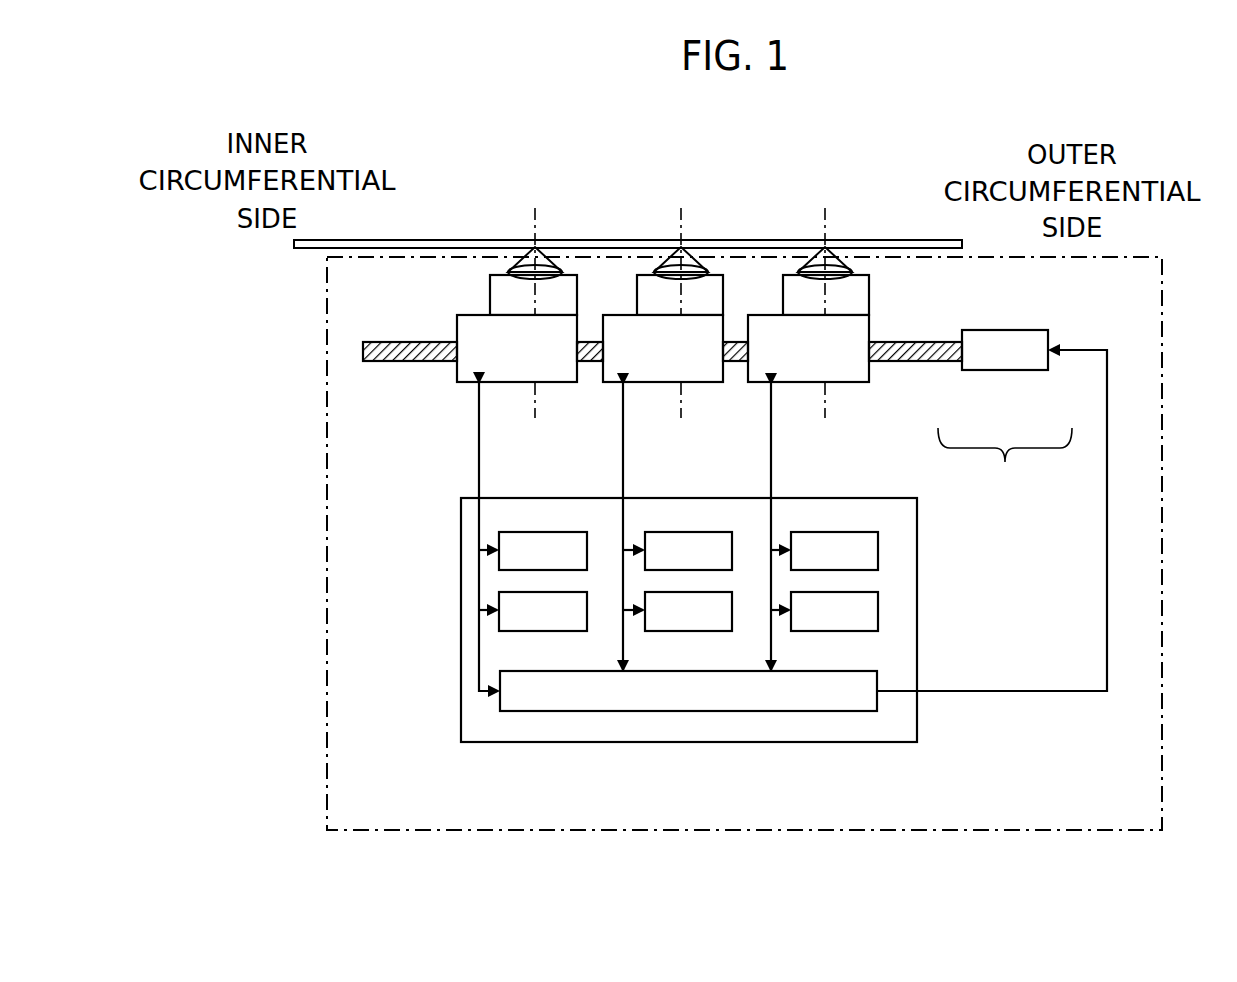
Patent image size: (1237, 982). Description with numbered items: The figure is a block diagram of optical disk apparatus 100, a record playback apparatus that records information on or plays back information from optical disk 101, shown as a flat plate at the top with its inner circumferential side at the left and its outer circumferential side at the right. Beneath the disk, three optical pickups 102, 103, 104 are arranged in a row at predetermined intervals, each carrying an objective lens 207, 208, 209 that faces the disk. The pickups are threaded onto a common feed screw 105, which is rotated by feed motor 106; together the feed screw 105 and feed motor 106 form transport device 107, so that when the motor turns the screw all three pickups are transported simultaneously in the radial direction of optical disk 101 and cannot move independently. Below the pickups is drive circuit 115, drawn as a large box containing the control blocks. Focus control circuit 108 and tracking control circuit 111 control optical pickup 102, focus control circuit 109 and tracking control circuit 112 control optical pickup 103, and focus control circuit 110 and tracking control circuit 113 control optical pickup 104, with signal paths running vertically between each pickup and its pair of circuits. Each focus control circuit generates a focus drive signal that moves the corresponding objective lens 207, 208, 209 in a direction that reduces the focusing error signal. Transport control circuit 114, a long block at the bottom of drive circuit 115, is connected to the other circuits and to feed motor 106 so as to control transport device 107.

The optical disk apparatus 100 is at (1162, 370).
The optical disk 101 is at (855, 239).
The optical pickup 102 is at (465, 327).
The optical pickup 103 is at (612, 310).
The optical pickup 104 is at (850, 327).
The feed screw 105 is at (923, 360).
The feed motor 106 is at (988, 347).
The transport device 107 is at (1005, 463).
The focus control circuit 108 is at (507, 535).
The focus control circuit 109 is at (653, 535).
The focus control circuit 110 is at (803, 535).
The tracking control circuit 111 is at (507, 602).
The tracking control circuit 112 is at (695, 603).
The tracking control circuit 113 is at (842, 603).
The transport control circuit 114 is at (572, 697).
The drive circuit 115 is at (895, 711).
The objective lens 207 is at (515, 258).
The objective lens 208 is at (665, 258).
The objective lens 209 is at (808, 258).